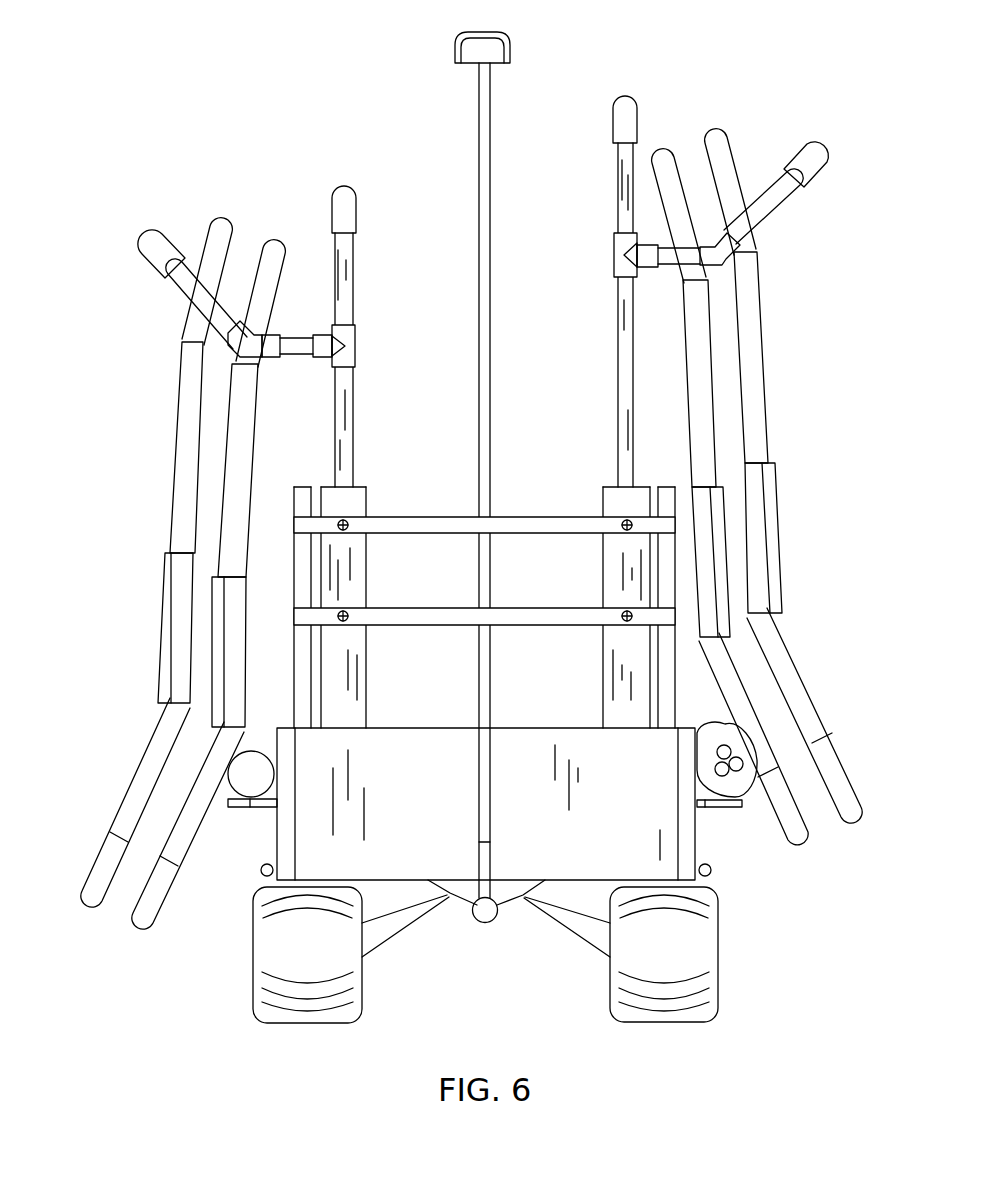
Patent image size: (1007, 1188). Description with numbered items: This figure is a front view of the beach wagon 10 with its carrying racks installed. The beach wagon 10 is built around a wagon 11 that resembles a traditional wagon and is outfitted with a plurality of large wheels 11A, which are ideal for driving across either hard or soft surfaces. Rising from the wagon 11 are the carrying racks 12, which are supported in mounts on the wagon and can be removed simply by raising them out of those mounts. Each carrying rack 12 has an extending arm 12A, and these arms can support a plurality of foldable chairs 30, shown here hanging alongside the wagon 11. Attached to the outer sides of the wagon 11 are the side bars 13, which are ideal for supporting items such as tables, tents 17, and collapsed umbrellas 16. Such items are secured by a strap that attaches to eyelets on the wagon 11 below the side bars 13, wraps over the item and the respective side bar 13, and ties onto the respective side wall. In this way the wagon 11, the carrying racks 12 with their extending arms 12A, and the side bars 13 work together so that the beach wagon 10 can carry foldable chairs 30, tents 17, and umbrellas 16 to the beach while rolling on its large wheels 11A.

The beach wagon 10 is at (236, 118).
The wagon 11 is at (572, 843).
The large wheels 11A is at (287, 965).
The carrying racks 12 is at (342, 203).
The extending arm 12A is at (142, 242).
The side bars 13 is at (250, 806).
The umbrella 16 is at (735, 768).
The tents 17 is at (258, 762).
The foldable chairs 30 is at (182, 600).